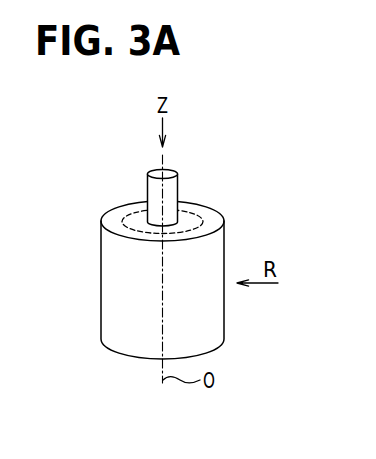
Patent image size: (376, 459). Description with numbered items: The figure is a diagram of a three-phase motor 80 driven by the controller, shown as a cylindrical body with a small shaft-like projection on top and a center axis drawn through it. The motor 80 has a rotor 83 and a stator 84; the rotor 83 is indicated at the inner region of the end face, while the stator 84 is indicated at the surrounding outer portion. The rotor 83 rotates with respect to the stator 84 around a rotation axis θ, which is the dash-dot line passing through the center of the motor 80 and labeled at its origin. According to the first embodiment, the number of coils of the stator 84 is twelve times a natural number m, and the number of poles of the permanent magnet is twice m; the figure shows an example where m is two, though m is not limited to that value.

The motor 80 is at (140, 255).
The rotor 83 is at (183, 222).
The stator 84 is at (212, 222).